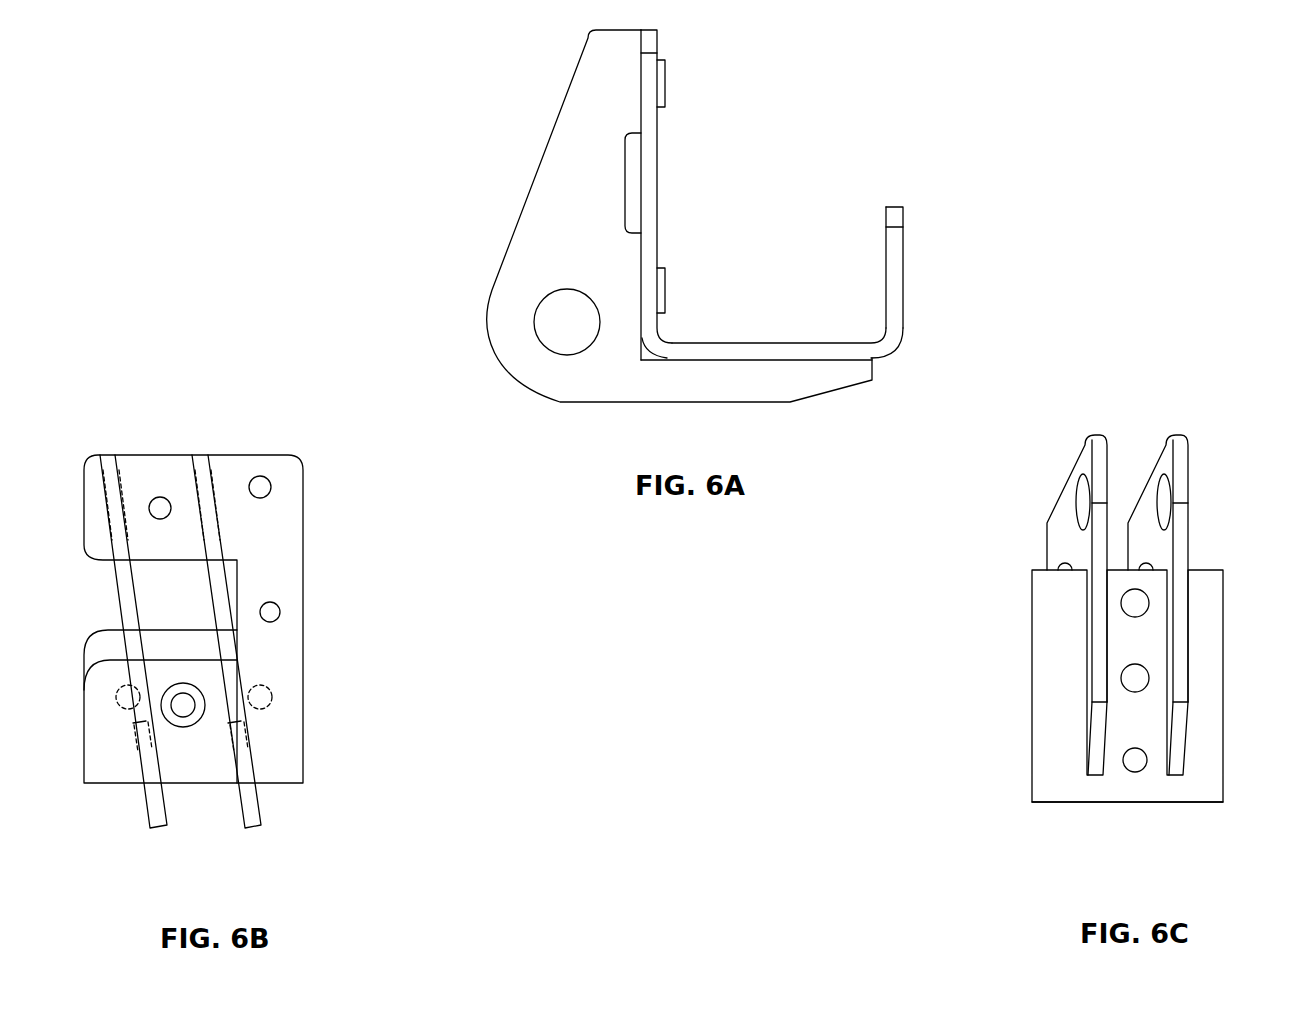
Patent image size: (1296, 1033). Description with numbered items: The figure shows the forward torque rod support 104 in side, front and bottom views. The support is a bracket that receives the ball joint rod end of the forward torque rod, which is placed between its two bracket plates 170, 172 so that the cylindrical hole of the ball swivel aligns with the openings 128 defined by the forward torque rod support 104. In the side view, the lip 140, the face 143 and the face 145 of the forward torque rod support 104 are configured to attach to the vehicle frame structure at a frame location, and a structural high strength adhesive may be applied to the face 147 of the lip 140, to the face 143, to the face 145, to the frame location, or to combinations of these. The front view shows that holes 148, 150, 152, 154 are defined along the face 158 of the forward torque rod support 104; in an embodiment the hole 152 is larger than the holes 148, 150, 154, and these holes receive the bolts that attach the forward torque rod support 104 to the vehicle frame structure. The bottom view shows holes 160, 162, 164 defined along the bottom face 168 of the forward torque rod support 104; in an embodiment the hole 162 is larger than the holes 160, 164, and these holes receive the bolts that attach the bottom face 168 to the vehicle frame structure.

In FIG. 6A, the forward torque rod support 104 is at (582, 72).
In FIG. 6B, the forward torque rod support 104 is at (277, 540).
In FIG. 6C, the forward torque rod support 104 is at (1047, 676).
In FIG. 6A, the openings 128 is at (542, 323).
In FIG. 6C, the openings 128 is at (1077, 490).
In FIG. 6A, the lip 140 is at (903, 248).
In FIG. 6A, the face 143 is at (650, 138).
In FIG. 6A, the face 145 is at (757, 341).
In FIG. 6A, the face of lip 147 is at (885, 277).
In FIG. 6B, the hole 148 is at (262, 476).
In FIG. 6B, the hole 150 is at (160, 497).
In FIG. 6B, the hole 152 is at (281, 614).
In FIG. 6B, the hole 154 is at (181, 727).
In FIG. 6B, the face 158 is at (287, 732).
In FIG. 6C, the hole 160 is at (1138, 603).
In FIG. 6C, the hole 162 is at (1138, 678).
In FIG. 6C, the hole 164 is at (1138, 760).
In FIG. 6C, the bottom face 168 is at (1125, 802).
In FIG. 6C, the bracket plate 170 is at (1190, 482).
In FIG. 6C, the bracket plate 172 is at (1062, 513).